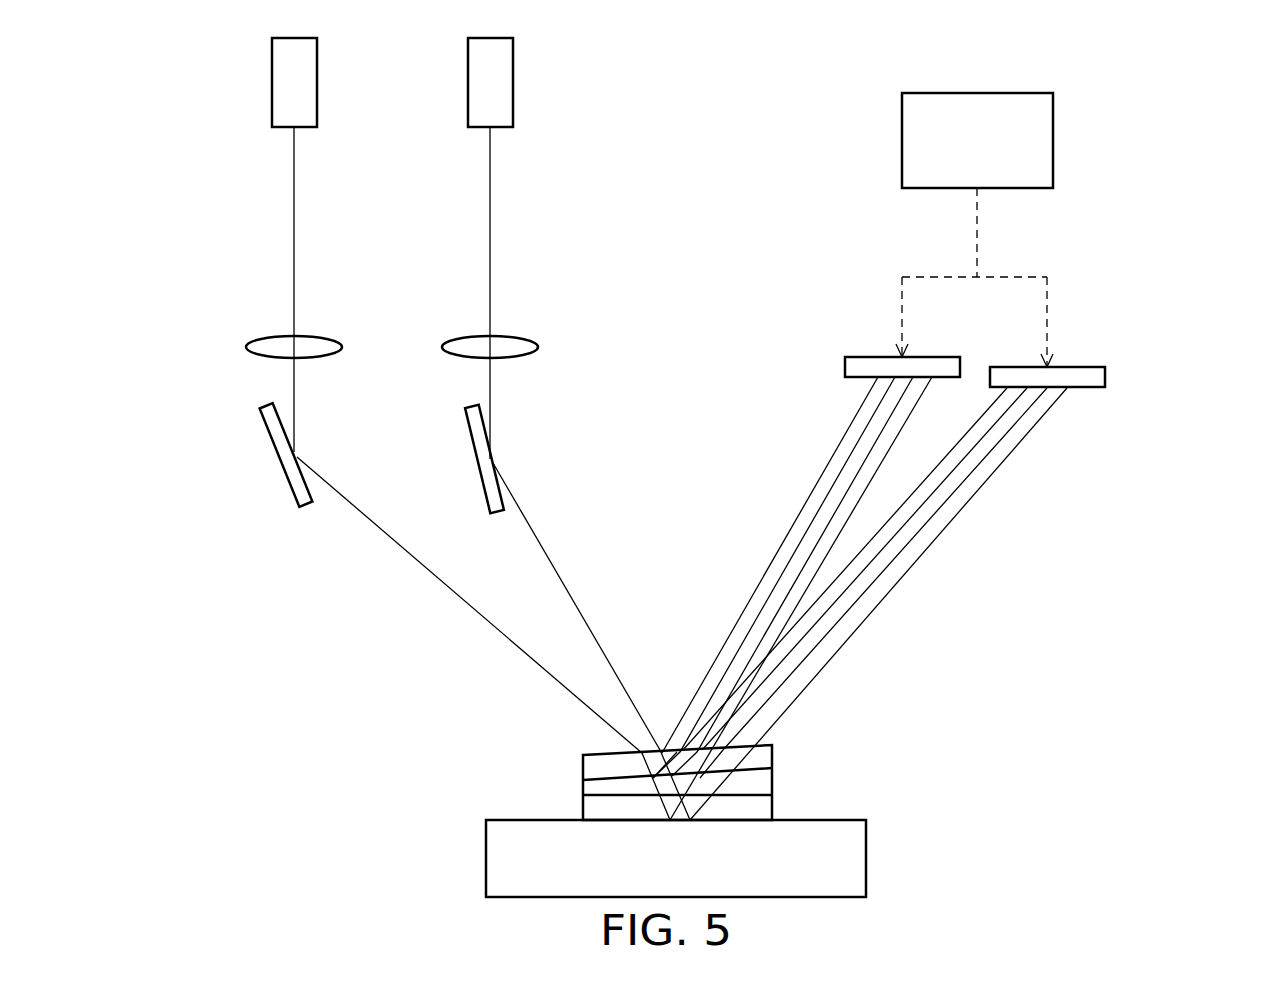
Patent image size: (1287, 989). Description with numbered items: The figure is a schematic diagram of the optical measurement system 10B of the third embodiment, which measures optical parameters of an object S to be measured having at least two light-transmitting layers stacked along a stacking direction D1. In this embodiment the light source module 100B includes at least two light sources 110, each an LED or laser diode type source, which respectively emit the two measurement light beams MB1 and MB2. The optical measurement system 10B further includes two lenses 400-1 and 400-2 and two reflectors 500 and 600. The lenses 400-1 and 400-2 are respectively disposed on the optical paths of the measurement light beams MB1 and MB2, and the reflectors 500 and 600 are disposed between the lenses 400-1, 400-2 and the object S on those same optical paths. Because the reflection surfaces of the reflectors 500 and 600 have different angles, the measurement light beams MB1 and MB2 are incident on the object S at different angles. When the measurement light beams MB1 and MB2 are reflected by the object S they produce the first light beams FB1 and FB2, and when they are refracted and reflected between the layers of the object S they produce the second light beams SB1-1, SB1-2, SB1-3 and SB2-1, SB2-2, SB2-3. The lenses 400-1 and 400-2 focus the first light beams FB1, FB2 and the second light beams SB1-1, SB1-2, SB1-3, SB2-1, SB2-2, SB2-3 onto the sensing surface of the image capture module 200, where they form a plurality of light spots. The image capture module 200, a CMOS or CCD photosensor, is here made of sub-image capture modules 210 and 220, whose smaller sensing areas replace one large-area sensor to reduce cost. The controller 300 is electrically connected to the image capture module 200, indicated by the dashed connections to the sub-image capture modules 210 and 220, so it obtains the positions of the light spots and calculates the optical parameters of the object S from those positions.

The light source 110 is at (280, 83).
The measurement light beam MB1 is at (293, 234).
The measurement light beam MB2 is at (493, 234).
The lens 400-1 is at (246, 348).
The lens 400-2 is at (538, 348).
The reflector 500 is at (269, 436).
The reflector 600 is at (472, 440).
The light source module 100B is at (602, 103).
The controller 300 is at (1054, 141).
The image capture module 200 is at (1049, 342).
The sub-image capture module 220 is at (950, 357).
The sub-image capture module 210 is at (1088, 367).
The first light beam FB1 is at (960, 440).
The first light beam FB2 is at (788, 535).
The second light beam SB1-1 is at (946, 485).
The second light beam SB1-2 is at (990, 448).
The second light beam SB1-3 is at (1045, 414).
The second light beam SB2-1 is at (822, 507).
The second light beam SB2-2 is at (859, 469).
The second light beam SB2-3 is at (902, 425).
The object to be measured S is at (786, 769).
The stacking direction D1 is at (415, 770).
The optical measurement system 10B is at (1043, 892).